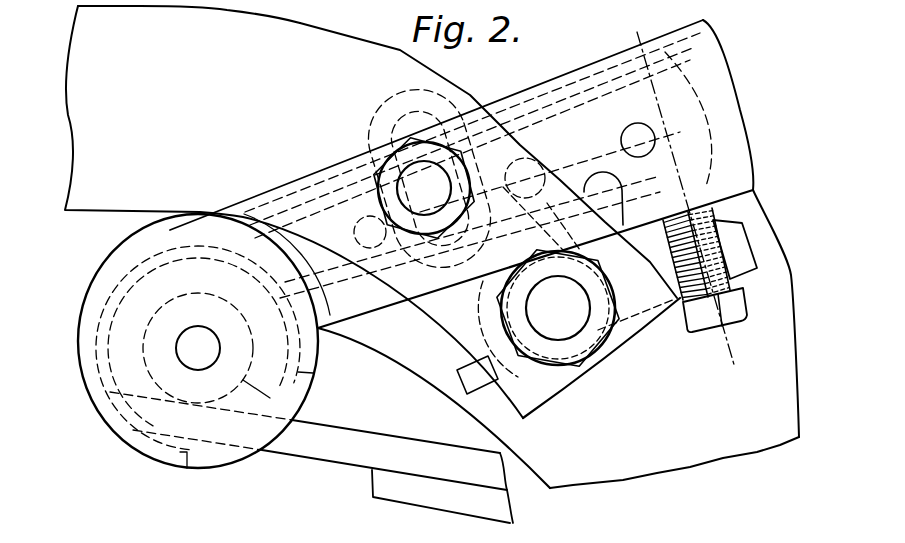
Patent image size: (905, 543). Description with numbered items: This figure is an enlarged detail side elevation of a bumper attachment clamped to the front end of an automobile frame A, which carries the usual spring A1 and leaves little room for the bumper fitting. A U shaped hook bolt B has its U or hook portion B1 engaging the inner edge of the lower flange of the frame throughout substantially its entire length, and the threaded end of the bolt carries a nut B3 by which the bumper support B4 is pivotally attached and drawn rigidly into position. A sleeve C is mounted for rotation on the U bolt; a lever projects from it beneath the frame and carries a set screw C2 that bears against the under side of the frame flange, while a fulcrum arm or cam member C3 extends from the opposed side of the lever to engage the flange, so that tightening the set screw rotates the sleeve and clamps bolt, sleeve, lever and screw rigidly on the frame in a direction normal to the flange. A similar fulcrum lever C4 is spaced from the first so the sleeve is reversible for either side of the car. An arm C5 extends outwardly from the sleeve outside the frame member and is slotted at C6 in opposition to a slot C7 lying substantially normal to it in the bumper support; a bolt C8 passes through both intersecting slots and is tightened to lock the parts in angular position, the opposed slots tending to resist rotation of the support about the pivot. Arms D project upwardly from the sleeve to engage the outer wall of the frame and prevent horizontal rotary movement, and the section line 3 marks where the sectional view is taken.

The front end of automobile frame A is at (720, 80).
The spring A1 is at (323, 443).
The U shaped hook bolt B is at (592, 343).
The U or hook portion B1 is at (547, 176).
The nut B3 is at (576, 346).
The bumper support B4 is at (113, 185).
The sleeve C is at (737, 233).
The set screw C2 is at (735, 312).
The fulcrum arm or cam member C3 is at (437, 311).
The fulcrum lever C4 is at (472, 372).
The arm C5 is at (392, 97).
The slot C6 is at (390, 118).
The slot C7 is at (478, 168).
The bolt C8 is at (393, 202).
The arms D is at (613, 187).
The section line 3 is at (657, 35).